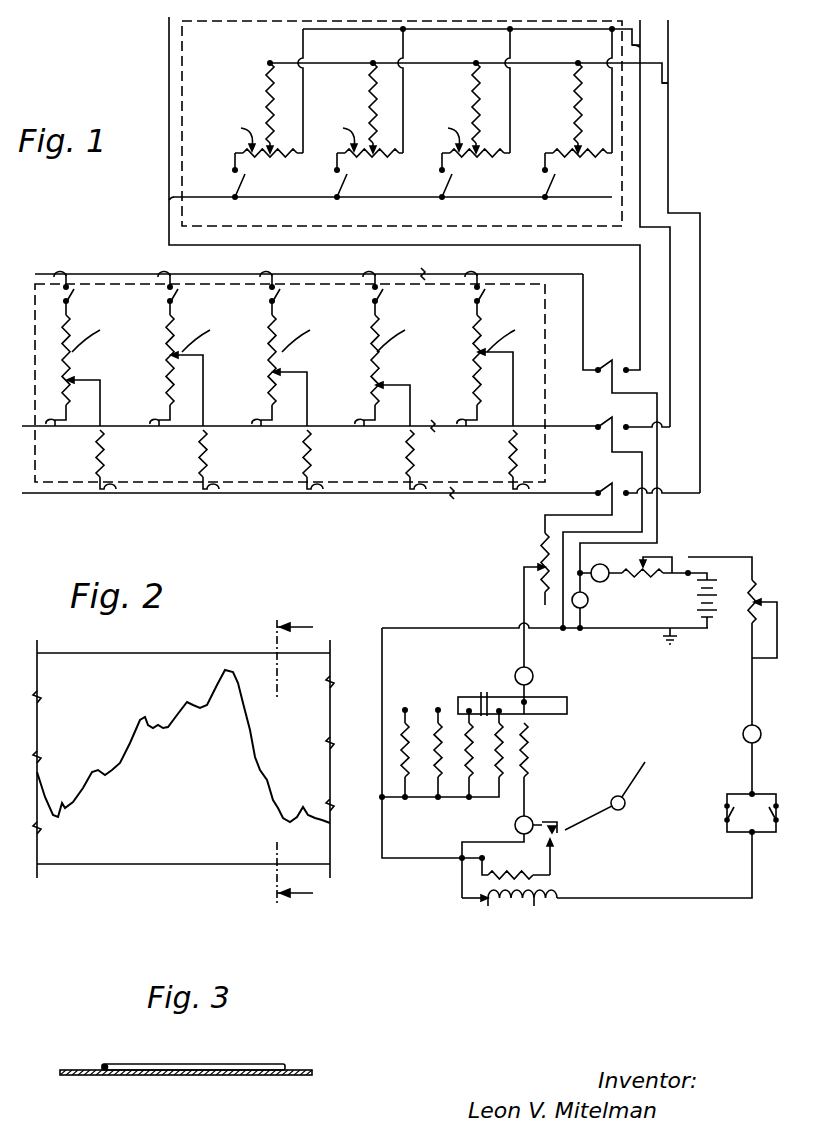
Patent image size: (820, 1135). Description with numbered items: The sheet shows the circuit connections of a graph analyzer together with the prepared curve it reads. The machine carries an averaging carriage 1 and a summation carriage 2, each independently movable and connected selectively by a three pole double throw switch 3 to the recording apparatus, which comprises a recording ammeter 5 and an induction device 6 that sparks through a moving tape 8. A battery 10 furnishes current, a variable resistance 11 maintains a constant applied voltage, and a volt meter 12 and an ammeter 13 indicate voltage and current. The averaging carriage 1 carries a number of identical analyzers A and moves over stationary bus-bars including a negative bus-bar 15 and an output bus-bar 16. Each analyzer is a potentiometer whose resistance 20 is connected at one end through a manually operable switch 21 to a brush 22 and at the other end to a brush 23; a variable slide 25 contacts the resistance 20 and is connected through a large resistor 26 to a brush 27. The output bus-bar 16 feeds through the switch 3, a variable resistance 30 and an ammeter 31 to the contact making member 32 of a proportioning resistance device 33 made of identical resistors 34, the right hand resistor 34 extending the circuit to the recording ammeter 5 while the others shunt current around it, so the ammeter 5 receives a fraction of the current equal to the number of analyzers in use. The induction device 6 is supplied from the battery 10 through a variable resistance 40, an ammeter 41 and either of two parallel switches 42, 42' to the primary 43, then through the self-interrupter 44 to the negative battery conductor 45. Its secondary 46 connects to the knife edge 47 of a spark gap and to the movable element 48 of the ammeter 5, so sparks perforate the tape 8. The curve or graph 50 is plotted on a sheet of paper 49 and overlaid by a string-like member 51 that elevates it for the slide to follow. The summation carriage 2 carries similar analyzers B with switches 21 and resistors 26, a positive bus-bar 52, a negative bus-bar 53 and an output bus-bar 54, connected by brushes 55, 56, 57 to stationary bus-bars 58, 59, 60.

In FIG. 1, the averaging carriage 1 is at (545, 330).
In FIG. 1, the summation carriage 2 is at (180, 37).
In FIG. 1, the three pole double throw switch 3 is at (612, 364).
In FIG. 2, the three pole double throw switch 3 is at (295, 763).
In FIG. 1, the recording ammeter 5 is at (517, 829).
In FIG. 1, the induction device 6 is at (558, 888).
In FIG. 1, the moving tape 8 is at (602, 803).
In FIG. 1, the battery 10 is at (583, 271).
In FIG. 1, the variable resistance 11 is at (643, 580).
In FIG. 1, the volt meter 12 is at (589, 605).
In FIG. 1, the ammeter 13 is at (604, 568).
In FIG. 1, the negative bus-bar 15 is at (594, 424).
In FIG. 1, the output bus-bar 16 is at (576, 493).
In FIG. 1, the resistance 20 is at (267, 157).
In FIG. 1, the manually operable switch 21 is at (233, 173).
In FIG. 1, the brush 22 is at (60, 274).
In FIG. 1, the brush 23 is at (52, 422).
In FIG. 1, the variable slide 25 is at (276, 148).
In FIG. 1, the resistor 26 is at (266, 93).
In FIG. 1, the brush 27 is at (106, 498).
In FIG. 1, the variable resistance 30 is at (537, 562).
In FIG. 1, the ammeter 31 is at (533, 677).
In FIG. 1, the contact making member 32 is at (553, 715).
In FIG. 1, the proportioning resistance device 33 is at (422, 710).
In FIG. 1, the resistors 34 is at (400, 750).
In FIG. 1, the variable resistance 40 is at (765, 600).
In FIG. 1, the ammeter 41 is at (762, 734).
In FIG. 1, the switch 42 is at (736, 812).
In FIG. 1, the switch 42' is at (676, 851).
In FIG. 1, the primary 43 is at (533, 906).
In FIG. 1, the self-interrupter 44 is at (488, 906).
In FIG. 1, the negative battery conductor 45 is at (411, 860).
In FIG. 1, the secondary 46 is at (538, 875).
In FIG. 1, the knife edge 47 is at (555, 843).
In FIG. 1, the movable element 48 is at (556, 821).
In FIG. 2, the sheet of paper 49 is at (172, 852).
In FIG. 3, the sheet of paper 49 is at (225, 1078).
In FIG. 2, the curve or graph 50 is at (177, 727).
In FIG. 3, the curve or graph 50 is at (148, 1071).
In FIG. 3, the string-like member 51 is at (105, 1064).
In FIG. 1, the positive bus-bar 52 is at (382, 199).
In FIG. 1, the negative bus-bar 53 is at (527, 30).
In FIG. 1, the collecting or output bus-bar 54 is at (425, 63).
In FIG. 1, the brush 55 is at (176, 204).
In FIG. 1, the brush 56 is at (640, 36).
In FIG. 1, the brush 57 is at (670, 85).
In FIG. 1, the bus-bar 58 is at (168, 80).
In FIG. 1, the bus-bar 59 is at (640, 113).
In FIG. 1, the bus-bar 60 is at (670, 157).
In FIG. 1, the analyzers A is at (295, 333).
In FIG. 1, the analyzers B is at (345, 136).